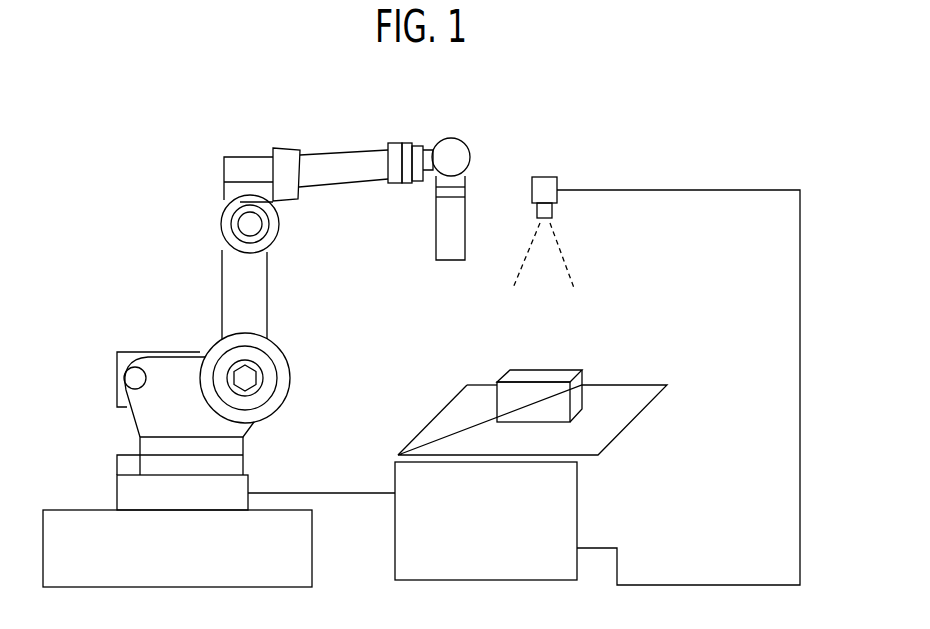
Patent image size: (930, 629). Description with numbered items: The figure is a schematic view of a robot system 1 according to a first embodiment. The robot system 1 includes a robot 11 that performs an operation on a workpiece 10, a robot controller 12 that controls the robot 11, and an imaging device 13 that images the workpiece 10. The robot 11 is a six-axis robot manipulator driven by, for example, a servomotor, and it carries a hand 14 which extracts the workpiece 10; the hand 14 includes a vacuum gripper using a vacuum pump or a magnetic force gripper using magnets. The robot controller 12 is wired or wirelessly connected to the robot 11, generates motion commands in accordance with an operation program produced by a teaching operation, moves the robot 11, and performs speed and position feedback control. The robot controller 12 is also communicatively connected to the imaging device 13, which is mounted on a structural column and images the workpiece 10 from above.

The robot system 1 is at (697, 127).
The workpiece 10 is at (545, 370).
The robot 11 is at (341, 152).
The robot controller 12 is at (577, 503).
The imaging device 13 is at (544, 176).
The hand 14 is at (434, 228).